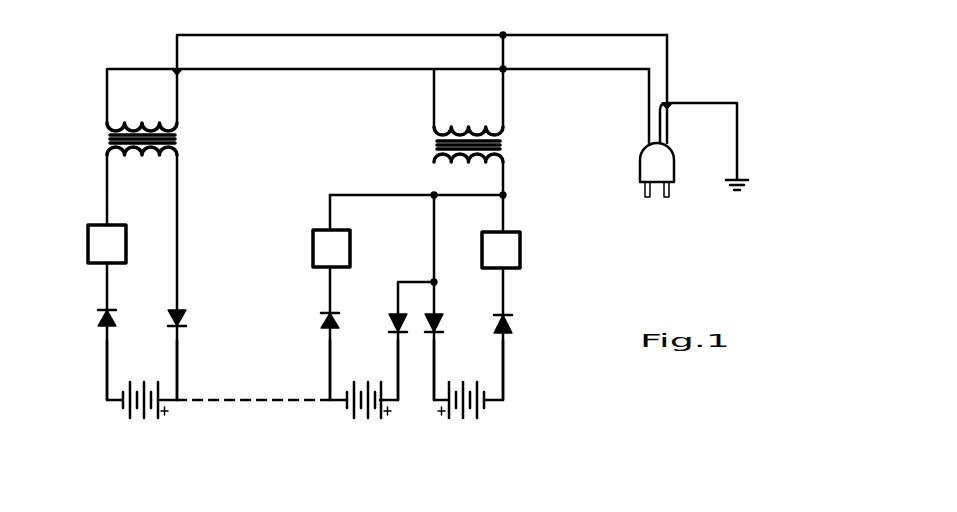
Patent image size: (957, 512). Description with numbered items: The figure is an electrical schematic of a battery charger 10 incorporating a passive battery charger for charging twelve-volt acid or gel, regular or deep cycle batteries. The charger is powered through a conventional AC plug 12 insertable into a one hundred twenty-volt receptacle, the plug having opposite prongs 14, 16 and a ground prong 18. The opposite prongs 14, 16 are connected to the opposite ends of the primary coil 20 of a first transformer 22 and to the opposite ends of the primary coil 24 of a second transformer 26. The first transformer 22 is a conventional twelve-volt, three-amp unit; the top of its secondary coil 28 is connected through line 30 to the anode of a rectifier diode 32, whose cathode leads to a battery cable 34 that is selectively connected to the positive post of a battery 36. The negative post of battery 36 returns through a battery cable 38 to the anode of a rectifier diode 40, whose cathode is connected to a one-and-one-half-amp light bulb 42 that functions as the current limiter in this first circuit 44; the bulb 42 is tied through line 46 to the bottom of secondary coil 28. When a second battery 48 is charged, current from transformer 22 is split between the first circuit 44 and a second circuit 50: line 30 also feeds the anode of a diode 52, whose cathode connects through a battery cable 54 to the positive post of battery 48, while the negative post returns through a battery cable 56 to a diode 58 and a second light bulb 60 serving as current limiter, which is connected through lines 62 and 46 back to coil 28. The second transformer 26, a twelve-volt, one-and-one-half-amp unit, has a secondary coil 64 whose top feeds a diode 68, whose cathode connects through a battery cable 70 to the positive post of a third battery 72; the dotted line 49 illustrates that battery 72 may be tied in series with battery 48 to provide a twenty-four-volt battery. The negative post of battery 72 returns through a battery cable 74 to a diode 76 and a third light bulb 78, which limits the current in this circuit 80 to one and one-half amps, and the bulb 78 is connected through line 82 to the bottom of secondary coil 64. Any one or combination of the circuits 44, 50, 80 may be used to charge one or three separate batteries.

The battery charger 10 is at (770, 79).
The AC plug 12 is at (675, 168).
The prong 14 is at (669, 196).
The prong 16 is at (646, 196).
The ground prong 18 is at (742, 190).
The primary coil 20 is at (433, 127).
The first transformer 22 is at (503, 145).
The primary coil 24 is at (177, 124).
The second transformer 26 is at (177, 141).
The secondary coil 28 is at (429, 162).
The line 30 is at (434, 243).
The rectifier diode 32 is at (440, 318).
The battery cable 34 is at (434, 368).
The battery 36 is at (470, 420).
The battery cable 38 is at (503, 370).
The rectifier diode 40 is at (514, 322).
The light bulb 42 is at (512, 250).
The first circuit 44 is at (507, 211).
The line 46 is at (503, 175).
The second battery 48 is at (357, 420).
The dotted line 49 is at (258, 400).
The second circuit 50 is at (350, 194).
The diode 52 is at (398, 318).
The battery cable 54 is at (398, 368).
The battery cable 56 is at (330, 383).
The diode 58 is at (323, 322).
The light bulb 60 is at (313, 250).
The line 62 is at (328, 213).
The secondary coil 64 is at (177, 158).
The diode 68 is at (186, 318).
The battery cable 70 is at (177, 366).
The third battery 72 is at (133, 420).
The battery cable 74 is at (104, 373).
The diode 76 is at (97, 320).
The light bulb 78 is at (88, 249).
The circuit 80 is at (101, 158).
The line 82 is at (104, 197).